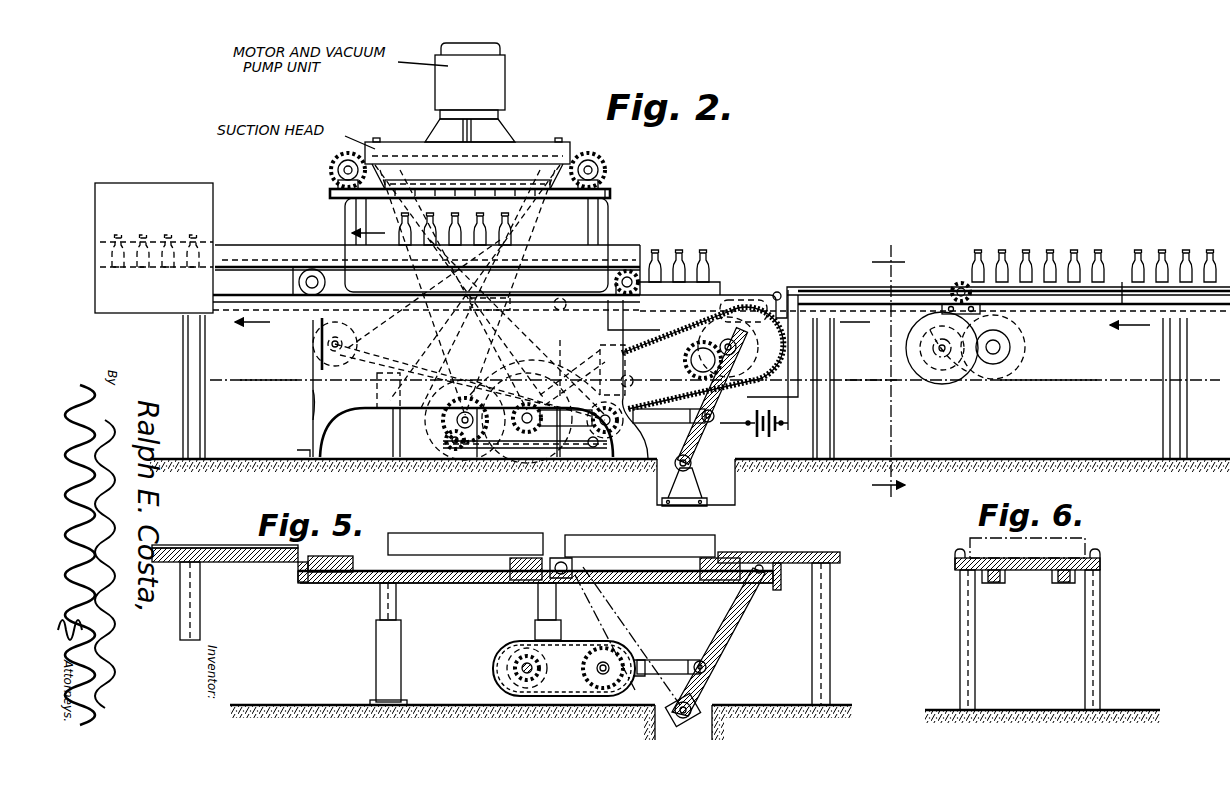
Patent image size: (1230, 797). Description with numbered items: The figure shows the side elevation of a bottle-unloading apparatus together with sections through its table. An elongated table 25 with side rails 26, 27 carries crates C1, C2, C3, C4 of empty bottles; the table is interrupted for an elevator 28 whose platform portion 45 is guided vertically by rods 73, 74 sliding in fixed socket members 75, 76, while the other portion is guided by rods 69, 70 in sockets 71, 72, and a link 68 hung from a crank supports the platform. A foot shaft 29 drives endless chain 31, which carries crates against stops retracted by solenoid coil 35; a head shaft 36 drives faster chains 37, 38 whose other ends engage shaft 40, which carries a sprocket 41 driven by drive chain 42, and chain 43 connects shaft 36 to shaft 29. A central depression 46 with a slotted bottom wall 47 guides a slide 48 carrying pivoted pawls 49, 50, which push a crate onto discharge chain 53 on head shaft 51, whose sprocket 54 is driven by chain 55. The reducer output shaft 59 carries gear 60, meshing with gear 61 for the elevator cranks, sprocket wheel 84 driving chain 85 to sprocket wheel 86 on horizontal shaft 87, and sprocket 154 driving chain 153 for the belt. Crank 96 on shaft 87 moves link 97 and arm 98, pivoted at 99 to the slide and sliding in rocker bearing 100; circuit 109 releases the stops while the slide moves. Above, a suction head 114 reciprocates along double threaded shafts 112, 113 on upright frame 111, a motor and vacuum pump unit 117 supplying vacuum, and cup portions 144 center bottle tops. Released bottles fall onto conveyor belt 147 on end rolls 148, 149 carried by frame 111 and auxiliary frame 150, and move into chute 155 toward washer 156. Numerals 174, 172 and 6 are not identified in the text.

In FIG. 2, the motor and vacuum pump unit 117 is at (490, 70).
In FIG. 2, the suction head 114 is at (537, 147).
In FIG. 2, the annular flange or cup portion 144 is at (428, 188).
In FIG. 2, the double threaded shaft 112 is at (343, 168).
In FIG. 2, the double threaded shaft 113 is at (605, 165).
In FIG. 2, the pulley bracket 174 is at (607, 175).
In FIG. 2, the support flange 172 is at (612, 184).
In FIG. 2, the upright frame 111 is at (605, 223).
In FIG. 2, the crate C1 is at (455, 252).
In FIG. 5, the crate C1 is at (468, 546).
In FIG. 2, the crate C2 is at (722, 298).
In FIG. 5, the crate C2 is at (640, 549).
In FIG. 2, the crate C3 is at (1050, 278).
In FIG. 6, the crate C3 is at (1085, 551).
In FIG. 2, the crate C4 is at (1160, 282).
In FIG. 2, the slide 48 is at (490, 288).
In FIG. 5, the slide 48 is at (521, 557).
In FIG. 2, the pivoted pawl 49 is at (542, 288).
In FIG. 5, the pivoted pawl 49 is at (566, 560).
In FIG. 2, the endless conveyor belt 147 is at (352, 238).
In FIG. 2, the chute 155 is at (238, 246).
In FIG. 2, the washer 156 is at (150, 318).
In FIG. 2, the end roll 148 is at (299, 283).
In FIG. 2, the end roll 149 is at (640, 276).
In FIG. 2, the sprocket 54 is at (312, 348).
In FIG. 2, the chain 55 is at (290, 350).
In FIG. 2, the head shaft 51 is at (313, 358).
In FIG. 2, the endless chain 53 is at (278, 392).
In FIG. 2, the auxiliary frame 150 is at (320, 398).
In FIG. 2, the vertical rod 73 is at (380, 410).
In FIG. 2, the fixed socket member 75 is at (385, 433).
In FIG. 2, the gear 61 is at (442, 423).
In FIG. 2, the link 68 is at (442, 442).
In FIG. 2, the elevator platform portion 45 is at (470, 292).
In FIG. 2, the elevator 28 is at (515, 356).
In FIG. 2, the vertical rod 74 is at (535, 377).
In FIG. 2, the fixed socket member 76 is at (572, 377).
In FIG. 2, the chain 153 is at (579, 370).
In FIG. 2, the gear 60 is at (468, 442).
In FIG. 2, the output shaft 59 is at (527, 436).
In FIG. 5, the output shaft 59 is at (515, 671).
In FIG. 2, the sprocket 154 is at (593, 446).
In FIG. 2, the chain 85 is at (624, 373).
In FIG. 5, the chain 85 is at (572, 642).
In FIG. 2, the sprocket wheel 86 is at (628, 392).
In FIG. 5, the sprocket wheel 86 is at (615, 650).
In FIG. 2, the drive chain 42 is at (690, 360).
In FIG. 2, the sprocket 41 is at (713, 354).
In FIG. 2, the shaft 40 is at (736, 352).
In FIG. 2, the arm 98 is at (706, 438).
In FIG. 5, the arm 98 is at (718, 630).
In FIG. 2, the link 97 is at (670, 428).
In FIG. 5, the link 97 is at (666, 660).
In FIG. 2, the pivot 99 is at (776, 312).
In FIG. 5, the pivot 99 is at (758, 581).
In FIG. 2, the pivoted pawl 50 is at (738, 296).
In FIG. 5, the pivoted pawl 50 is at (733, 557).
In FIG. 2, the rocker bearing 100 is at (700, 468).
In FIG. 5, the rocker bearing 100 is at (695, 709).
In FIG. 2, the energizing circuit 109 is at (816, 292).
In FIG. 2, the table 25 is at (1196, 318).
In FIG. 5, the table 25 is at (262, 566).
In FIG. 6, the table 25 is at (1032, 572).
In FIG. 2, the solenoid coil 35 is at (960, 283).
In FIG. 2, the head shaft 36 is at (912, 348).
In FIG. 2, the foot shaft 29 is at (1000, 347).
In FIG. 2, the chain 43 is at (960, 372).
In FIG. 2, the endless chain 31 is at (1042, 382).
In FIG. 2, the endless chain 38 is at (878, 384).
In FIG. 6, the endless chain 38 is at (1063, 586).
In FIG. 2, the section line 6 is at (888, 372).
In FIG. 5, the side rail 26 is at (229, 556).
In FIG. 6, the side rail 26 is at (956, 566).
In FIG. 6, the side rail 27 is at (1100, 566).
In FIG. 6, the endless chain 37 is at (995, 586).
In FIG. 5, the central longitudinal depression 46 is at (322, 580).
In FIG. 5, the slotted bottom wall 47 is at (478, 586).
In FIG. 5, the vertical rod 69 is at (396, 606).
In FIG. 5, the fixed socket member 71 is at (388, 681).
In FIG. 5, the vertical rod 70 is at (536, 601).
In FIG. 5, the fixed socket member 72 is at (534, 625).
In FIG. 5, the sprocket wheel 84 is at (515, 651).
In FIG. 5, the horizontal shaft 87 is at (593, 636).
In FIG. 5, the crank 96 is at (633, 674).